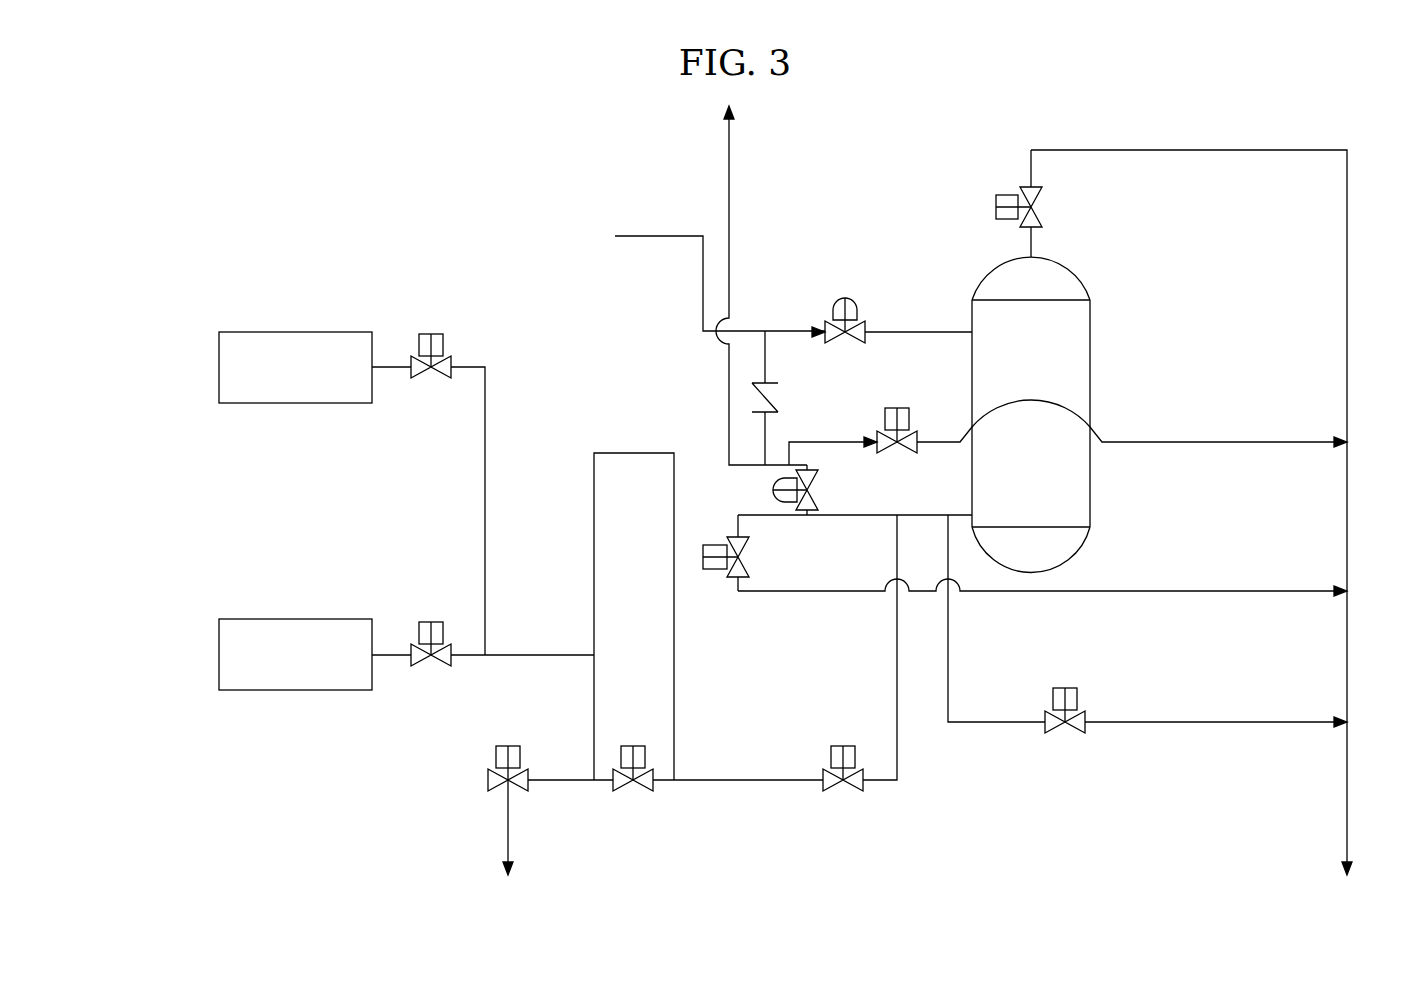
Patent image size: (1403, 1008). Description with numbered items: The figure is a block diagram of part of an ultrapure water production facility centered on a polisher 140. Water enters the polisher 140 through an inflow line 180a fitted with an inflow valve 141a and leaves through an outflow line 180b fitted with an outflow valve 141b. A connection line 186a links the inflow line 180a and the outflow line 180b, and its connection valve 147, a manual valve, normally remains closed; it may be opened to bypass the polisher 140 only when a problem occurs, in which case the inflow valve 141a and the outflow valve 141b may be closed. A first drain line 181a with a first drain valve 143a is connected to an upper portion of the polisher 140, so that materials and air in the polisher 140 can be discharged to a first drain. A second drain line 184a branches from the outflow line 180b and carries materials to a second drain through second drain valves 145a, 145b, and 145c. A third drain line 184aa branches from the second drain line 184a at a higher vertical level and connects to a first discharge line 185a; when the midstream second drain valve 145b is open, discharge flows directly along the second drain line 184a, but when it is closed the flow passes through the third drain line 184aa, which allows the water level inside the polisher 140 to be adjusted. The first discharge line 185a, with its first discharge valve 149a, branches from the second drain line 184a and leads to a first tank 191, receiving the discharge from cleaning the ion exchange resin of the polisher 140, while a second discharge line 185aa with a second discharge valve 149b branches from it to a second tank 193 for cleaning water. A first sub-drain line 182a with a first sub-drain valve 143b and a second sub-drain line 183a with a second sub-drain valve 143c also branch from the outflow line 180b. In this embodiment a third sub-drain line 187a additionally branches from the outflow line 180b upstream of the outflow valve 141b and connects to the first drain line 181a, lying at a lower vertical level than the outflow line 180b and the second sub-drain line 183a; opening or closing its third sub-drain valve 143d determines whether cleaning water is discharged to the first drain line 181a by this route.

The polisher 140 is at (1090, 330).
The inflow valve 141a is at (845, 298).
The outflow valve 141b is at (773, 490).
The first drain valve 143a is at (996, 207).
The first sub-drain valve 143b is at (897, 408).
The second sub-drain valve 143c is at (715, 569).
The third sub-drain valve 143d is at (1065, 688).
The second drain valve 145a is at (843, 746).
The midstream second drain valve 145b is at (633, 746).
The second drain valve 145c is at (508, 746).
The connection valve 147 is at (785, 400).
The first discharge valve 149a is at (431, 334).
The second discharge valve 149b is at (431, 622).
The inflow line 180a is at (660, 236).
The outflow line 180b is at (735, 168).
The first drain line 181a is at (1215, 150).
The first sub-drain line 182a is at (1215, 442).
The second sub-drain line 183a is at (1215, 591).
The second drain line 184a is at (897, 752).
The third drain line 184aa is at (674, 700).
The first discharge line 185a is at (485, 456).
The second discharge line 185aa is at (390, 655).
The connection line 186a is at (767, 360).
The third sub-drain line 187a is at (1215, 722).
The first tank 191 is at (219, 367).
The second tank 193 is at (219, 655).